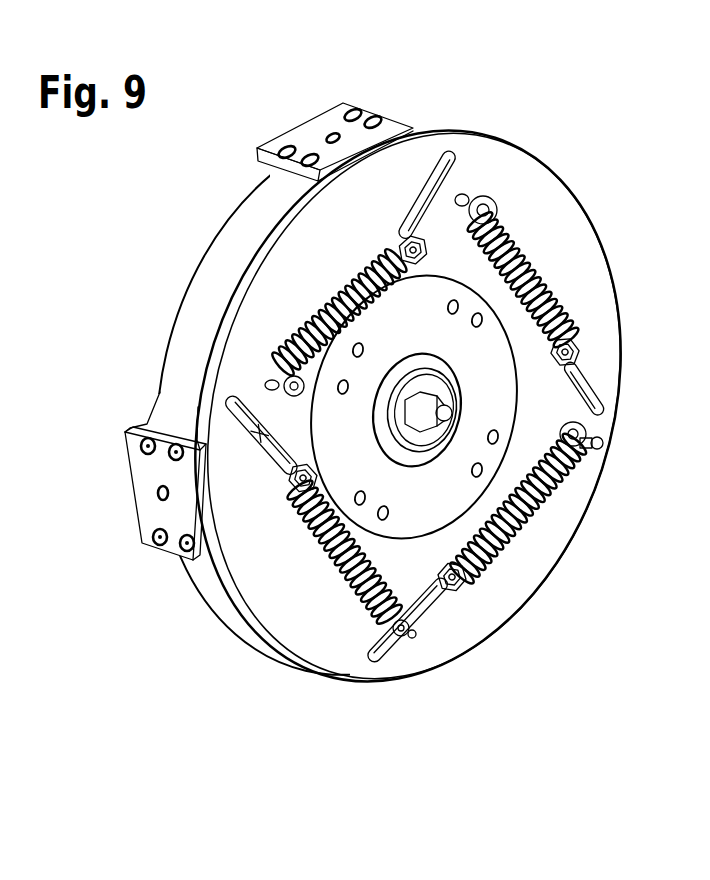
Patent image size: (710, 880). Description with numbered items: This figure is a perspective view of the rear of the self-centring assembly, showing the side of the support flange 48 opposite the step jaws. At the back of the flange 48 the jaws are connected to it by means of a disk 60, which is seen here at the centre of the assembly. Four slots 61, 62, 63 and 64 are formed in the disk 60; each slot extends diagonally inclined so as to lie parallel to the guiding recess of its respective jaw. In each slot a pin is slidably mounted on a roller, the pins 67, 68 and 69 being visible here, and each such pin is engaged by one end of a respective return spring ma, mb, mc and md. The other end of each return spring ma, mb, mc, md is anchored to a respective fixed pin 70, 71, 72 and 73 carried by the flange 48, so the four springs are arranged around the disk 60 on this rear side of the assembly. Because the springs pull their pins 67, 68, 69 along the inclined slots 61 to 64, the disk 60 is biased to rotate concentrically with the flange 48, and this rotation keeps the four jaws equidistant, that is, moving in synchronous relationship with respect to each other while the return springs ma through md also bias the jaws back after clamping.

The support flange 48 is at (231, 238).
The disk 60 is at (566, 203).
The slot 61 is at (495, 198).
The slot 62 is at (602, 411).
The slot 63 is at (403, 650).
The slot 64 is at (160, 390).
The pin 67 is at (581, 352).
The pin 68 is at (470, 580).
The pin 69 is at (300, 505).
The fixed pin 70 is at (282, 380).
The fixed pin 71 is at (497, 200).
The fixed pin 72 is at (604, 444).
The fixed pin 73 is at (408, 630).
The return spring ma is at (560, 278).
The return spring mb is at (540, 497).
The return spring mc is at (342, 598).
The return spring md is at (300, 338).